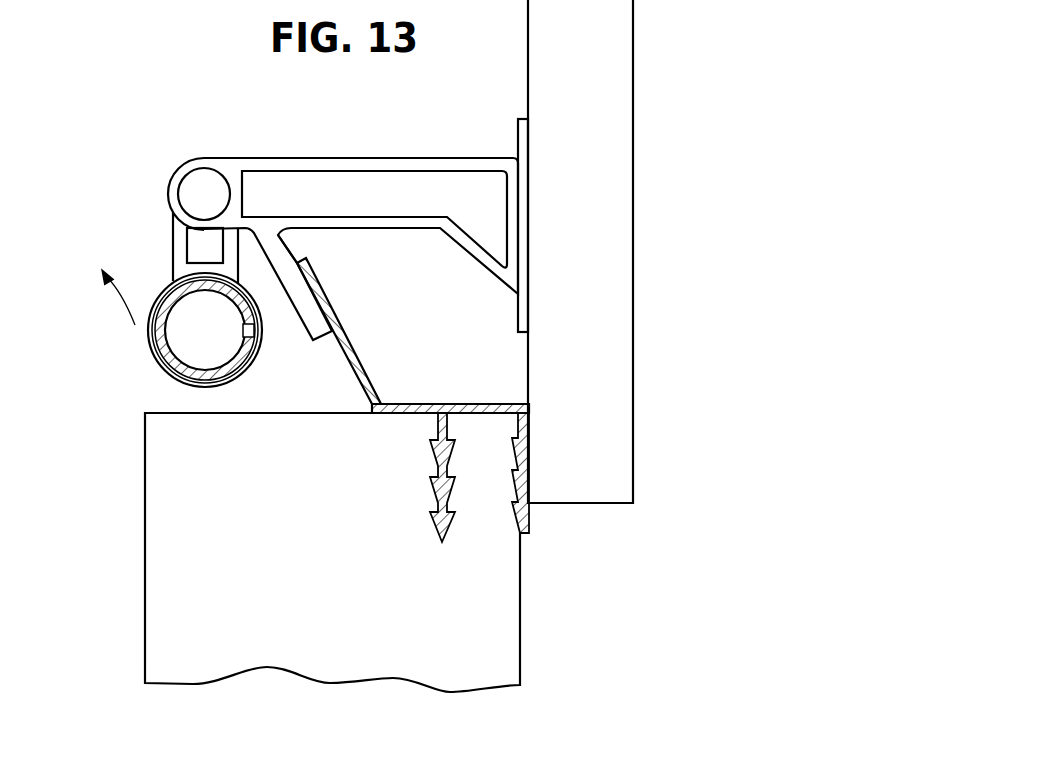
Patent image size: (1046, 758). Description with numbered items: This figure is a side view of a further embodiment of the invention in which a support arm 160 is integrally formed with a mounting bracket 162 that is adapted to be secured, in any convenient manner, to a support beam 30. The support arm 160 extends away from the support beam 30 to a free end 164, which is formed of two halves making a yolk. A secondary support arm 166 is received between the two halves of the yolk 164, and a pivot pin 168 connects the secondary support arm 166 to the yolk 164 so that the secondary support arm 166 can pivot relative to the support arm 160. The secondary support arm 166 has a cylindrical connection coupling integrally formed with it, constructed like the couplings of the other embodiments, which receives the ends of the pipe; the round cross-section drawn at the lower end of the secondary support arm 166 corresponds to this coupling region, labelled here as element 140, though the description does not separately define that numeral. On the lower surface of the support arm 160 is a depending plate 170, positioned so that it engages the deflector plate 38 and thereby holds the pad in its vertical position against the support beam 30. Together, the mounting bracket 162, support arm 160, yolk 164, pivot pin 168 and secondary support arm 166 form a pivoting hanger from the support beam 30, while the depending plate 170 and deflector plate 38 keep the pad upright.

The support beam 30 is at (599, 88).
The deflector plate 38 is at (333, 327).
The roller 140 is at (162, 341).
The support arm 160 is at (372, 157).
The mounting bracket 162 is at (520, 120).
The free end 164 is at (203, 158).
The secondary support arm 166 is at (173, 245).
The pivot pin 168 is at (167, 182).
The depending plate 170 is at (318, 327).